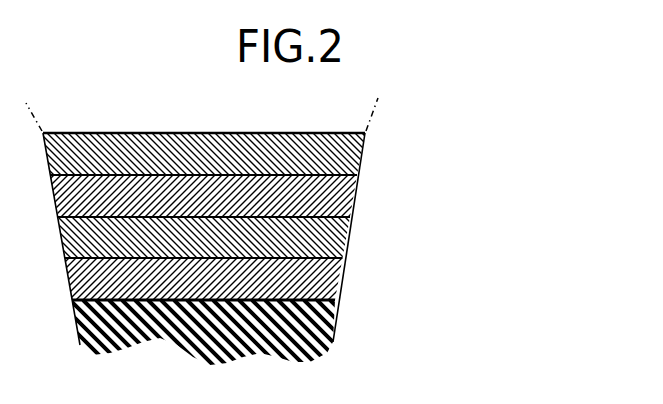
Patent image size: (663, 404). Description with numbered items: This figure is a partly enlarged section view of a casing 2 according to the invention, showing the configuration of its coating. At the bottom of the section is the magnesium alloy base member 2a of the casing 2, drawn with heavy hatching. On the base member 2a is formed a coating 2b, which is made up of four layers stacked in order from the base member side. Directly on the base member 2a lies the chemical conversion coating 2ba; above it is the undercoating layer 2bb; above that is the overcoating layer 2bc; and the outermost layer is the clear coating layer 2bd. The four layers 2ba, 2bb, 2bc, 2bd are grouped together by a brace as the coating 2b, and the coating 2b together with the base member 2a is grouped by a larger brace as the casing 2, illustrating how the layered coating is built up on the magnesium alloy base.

The casing 2 is at (276, 233).
The magnesium alloy base member 2a is at (333, 340).
The coating 2b is at (259, 215).
The chemical conversion coating 2ba is at (340, 278).
The undercoating layer 2bb is at (346, 236).
The overcoating layer 2bc is at (353, 193).
The clear coating layer 2bd is at (359, 152).